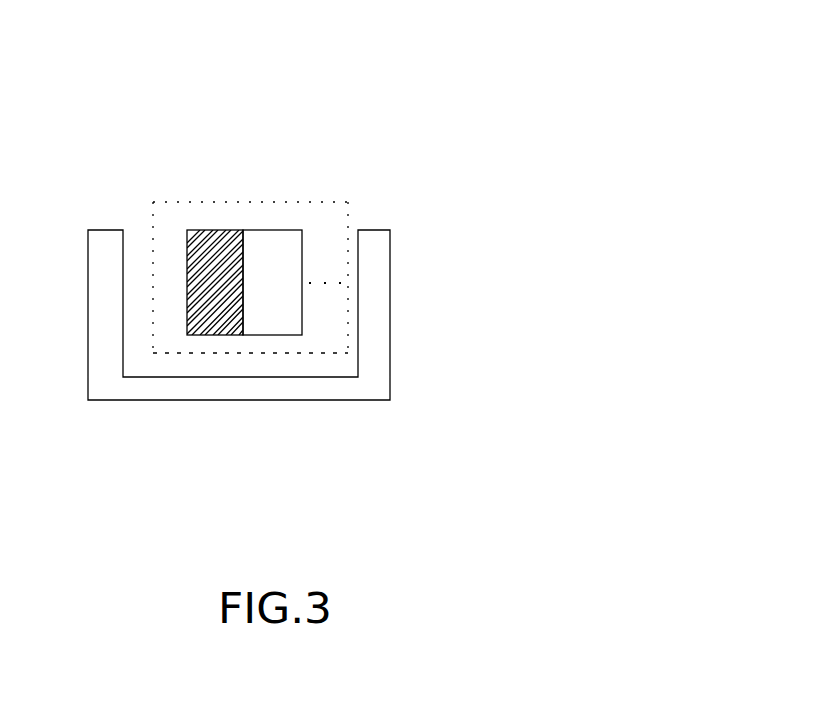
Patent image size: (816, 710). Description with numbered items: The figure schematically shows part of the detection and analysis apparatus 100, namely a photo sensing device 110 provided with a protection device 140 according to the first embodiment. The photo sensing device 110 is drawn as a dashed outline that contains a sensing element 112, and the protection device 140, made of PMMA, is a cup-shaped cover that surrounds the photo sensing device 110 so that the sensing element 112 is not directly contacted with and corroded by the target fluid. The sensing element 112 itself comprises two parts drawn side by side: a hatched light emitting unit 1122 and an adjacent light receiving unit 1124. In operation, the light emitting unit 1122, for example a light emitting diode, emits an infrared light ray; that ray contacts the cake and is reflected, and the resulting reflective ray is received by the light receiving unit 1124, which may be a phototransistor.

The detection and analysis apparatus 100 is at (353, 152).
The photo sensing device 110 is at (348, 202).
The sensing element 112 is at (253, 303).
The light emitting unit 1122 is at (187, 335).
The light receiving unit 1124 is at (280, 317).
The protection device 140 is at (367, 264).